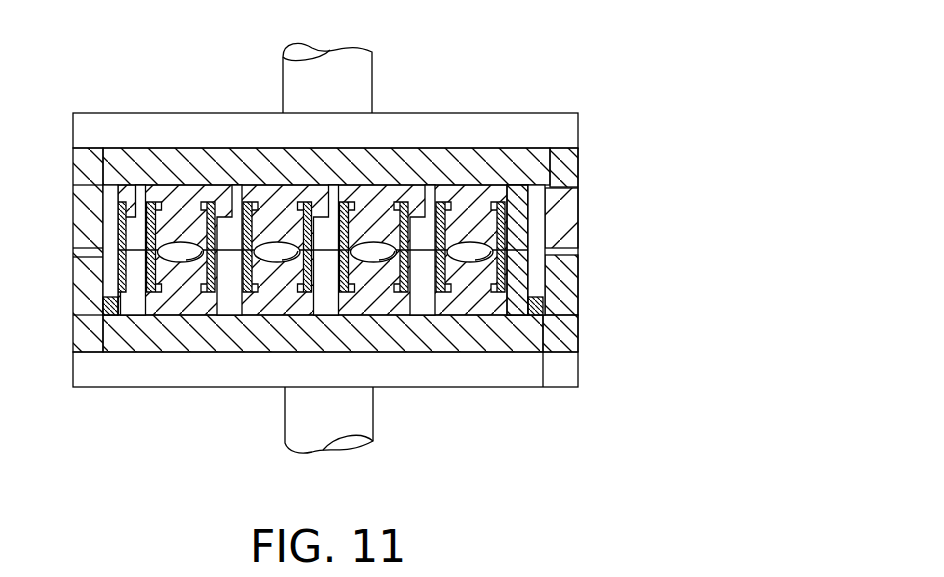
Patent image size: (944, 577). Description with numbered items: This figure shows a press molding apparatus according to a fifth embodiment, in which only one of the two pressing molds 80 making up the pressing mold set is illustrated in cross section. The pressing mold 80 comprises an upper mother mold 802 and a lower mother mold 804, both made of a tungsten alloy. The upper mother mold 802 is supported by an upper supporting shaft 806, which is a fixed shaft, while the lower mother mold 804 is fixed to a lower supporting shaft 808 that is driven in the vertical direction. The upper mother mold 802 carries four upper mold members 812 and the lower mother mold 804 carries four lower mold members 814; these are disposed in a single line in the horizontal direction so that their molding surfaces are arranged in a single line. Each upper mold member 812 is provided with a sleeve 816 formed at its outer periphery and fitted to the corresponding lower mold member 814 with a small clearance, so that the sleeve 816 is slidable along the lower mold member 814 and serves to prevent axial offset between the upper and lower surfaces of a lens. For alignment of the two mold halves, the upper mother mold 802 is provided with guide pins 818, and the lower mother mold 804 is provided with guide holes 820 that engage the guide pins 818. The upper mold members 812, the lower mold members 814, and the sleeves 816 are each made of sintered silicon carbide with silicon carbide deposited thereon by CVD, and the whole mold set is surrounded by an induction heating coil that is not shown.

The pressing mold 80 is at (601, 141).
The upper mother mold 802 is at (580, 196).
The lower mother mold 804 is at (578, 294).
The upper supporting shaft 806 is at (360, 76).
The lower supporting shaft 808 is at (298, 418).
The upper mold member 812 is at (465, 187).
The lower mold member 814 is at (468, 313).
The sleeve 816 is at (518, 240).
The guide pin 818 is at (105, 312).
The guide hole 820 is at (118, 304).